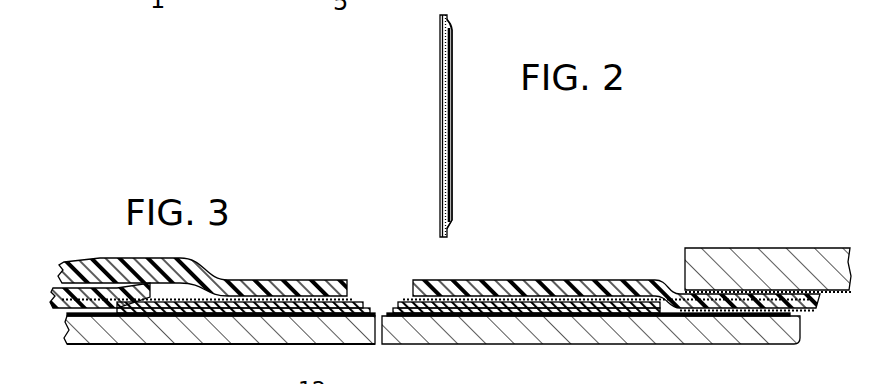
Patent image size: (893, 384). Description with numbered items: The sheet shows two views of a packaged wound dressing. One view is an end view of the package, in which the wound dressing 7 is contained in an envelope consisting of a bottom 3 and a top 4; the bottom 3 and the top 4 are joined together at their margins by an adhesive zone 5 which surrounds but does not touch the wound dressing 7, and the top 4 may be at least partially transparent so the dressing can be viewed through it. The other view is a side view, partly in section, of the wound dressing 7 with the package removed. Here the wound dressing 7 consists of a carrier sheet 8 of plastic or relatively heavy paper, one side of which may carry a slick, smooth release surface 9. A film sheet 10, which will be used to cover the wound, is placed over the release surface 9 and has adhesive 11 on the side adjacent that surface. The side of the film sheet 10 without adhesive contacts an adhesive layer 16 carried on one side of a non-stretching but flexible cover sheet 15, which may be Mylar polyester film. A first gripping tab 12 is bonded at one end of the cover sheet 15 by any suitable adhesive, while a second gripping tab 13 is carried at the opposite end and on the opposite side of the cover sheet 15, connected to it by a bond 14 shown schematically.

In FIG. 2, the bottom 3 is at (440, 105).
In FIG. 2, the top 4 is at (452, 209).
In FIG. 2, the adhesive zone 5 is at (452, 22).
In FIG. 2, the wound dressing 7 is at (450, 128).
In FIG. 3, the wound dressing 7 is at (120, 344).
In FIG. 3, the carrier sheet 8 is at (178, 334).
In FIG. 3, the release surface 9 is at (227, 315).
In FIG. 3, the film sheet 10 is at (363, 301).
In FIG. 3, the adhesive 11 is at (372, 310).
In FIG. 3, the first gripping tab 12 is at (53, 297).
In FIG. 3, the second gripping tab 13 is at (813, 260).
In FIG. 3, the bond 14 is at (843, 294).
In FIG. 3, the cover sheet 15 is at (267, 284).
In FIG. 3, the adhesive layer 16 is at (353, 296).